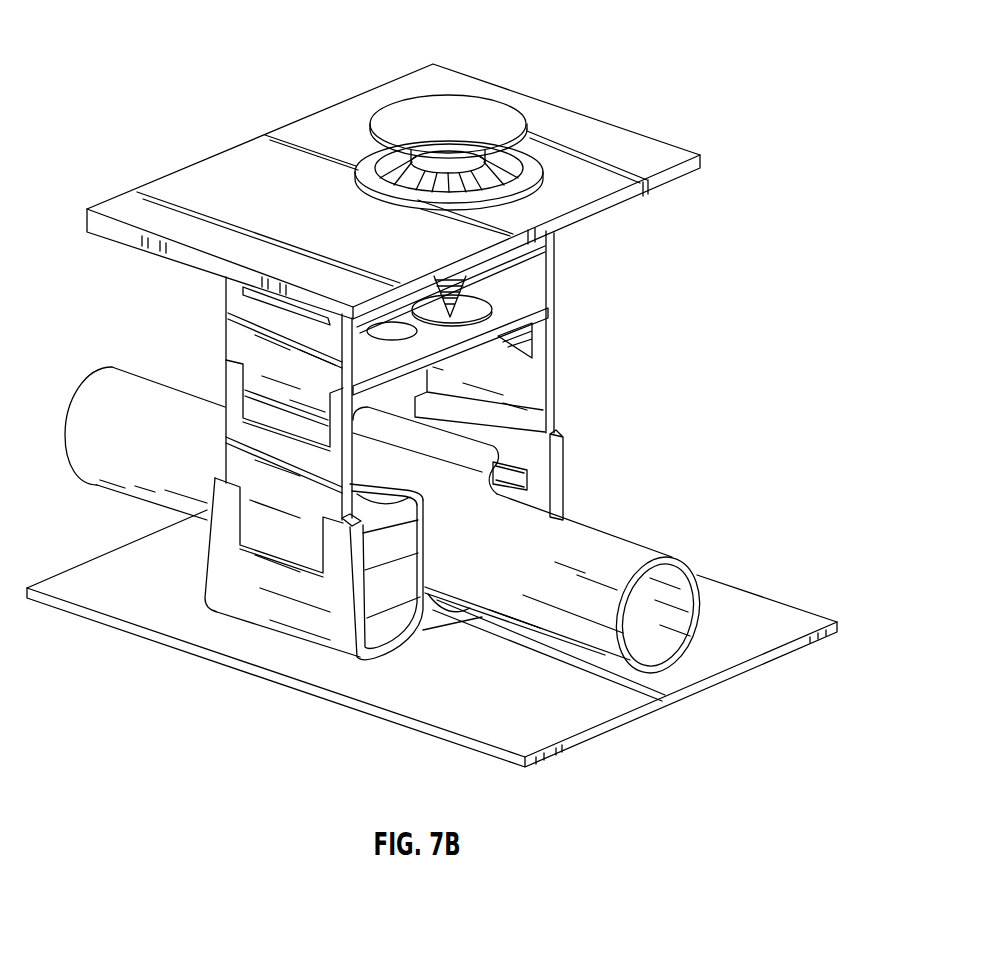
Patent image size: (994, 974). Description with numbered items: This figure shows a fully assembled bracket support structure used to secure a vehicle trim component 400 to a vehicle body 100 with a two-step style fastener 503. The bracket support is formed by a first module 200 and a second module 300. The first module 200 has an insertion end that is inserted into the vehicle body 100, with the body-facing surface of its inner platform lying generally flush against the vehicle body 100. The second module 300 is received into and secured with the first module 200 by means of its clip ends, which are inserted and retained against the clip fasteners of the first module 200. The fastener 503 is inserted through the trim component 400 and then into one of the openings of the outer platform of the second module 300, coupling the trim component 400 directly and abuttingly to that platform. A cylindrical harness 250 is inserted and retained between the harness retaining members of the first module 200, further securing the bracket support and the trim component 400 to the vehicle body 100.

The vehicle body 100 is at (503, 757).
The first module 200 is at (567, 472).
The cylindrical harness 250 is at (648, 548).
The second module 300 is at (558, 262).
The trim component 400 is at (603, 122).
The fastener 503 is at (485, 122).